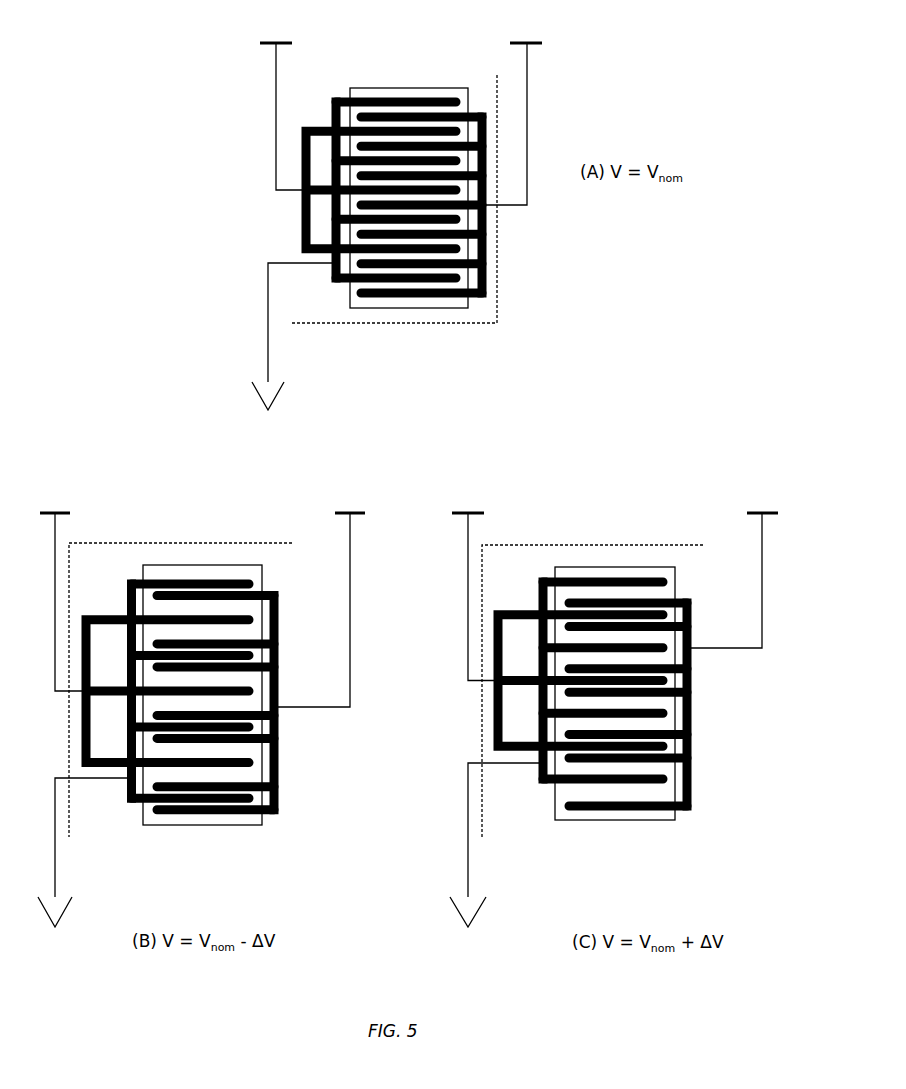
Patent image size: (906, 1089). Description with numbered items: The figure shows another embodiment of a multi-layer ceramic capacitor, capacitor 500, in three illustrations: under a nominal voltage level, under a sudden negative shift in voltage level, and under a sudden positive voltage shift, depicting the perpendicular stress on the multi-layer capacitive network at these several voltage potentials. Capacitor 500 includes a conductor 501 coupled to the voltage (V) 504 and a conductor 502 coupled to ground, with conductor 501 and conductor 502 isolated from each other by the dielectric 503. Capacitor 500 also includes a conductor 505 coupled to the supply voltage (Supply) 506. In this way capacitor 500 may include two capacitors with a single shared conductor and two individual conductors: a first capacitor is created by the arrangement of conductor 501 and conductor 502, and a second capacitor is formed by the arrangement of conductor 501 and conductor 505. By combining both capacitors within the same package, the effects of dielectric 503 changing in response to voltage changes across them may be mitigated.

The capacitor 500 is at (202, 542).
The conductor 501 is at (280, 757).
The conductor 502 is at (343, 287).
The dielectric 503 is at (410, 308).
The voltage (V) 504 is at (776, 510).
The conductor 505 is at (498, 608).
The supply voltage (Supply) 506 is at (42, 510).